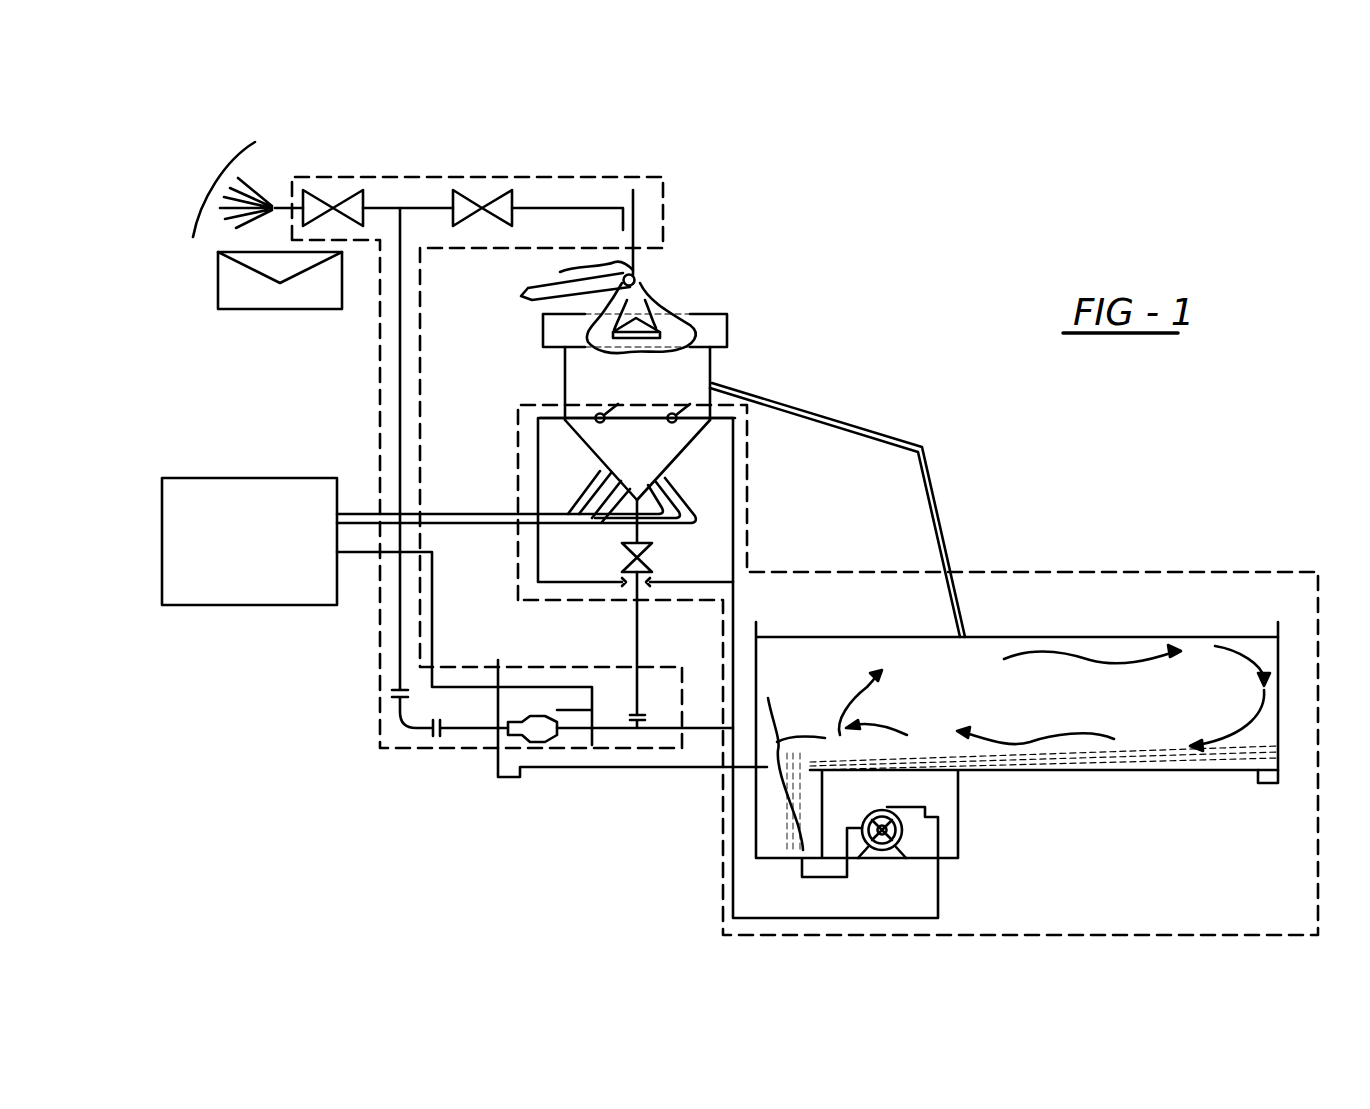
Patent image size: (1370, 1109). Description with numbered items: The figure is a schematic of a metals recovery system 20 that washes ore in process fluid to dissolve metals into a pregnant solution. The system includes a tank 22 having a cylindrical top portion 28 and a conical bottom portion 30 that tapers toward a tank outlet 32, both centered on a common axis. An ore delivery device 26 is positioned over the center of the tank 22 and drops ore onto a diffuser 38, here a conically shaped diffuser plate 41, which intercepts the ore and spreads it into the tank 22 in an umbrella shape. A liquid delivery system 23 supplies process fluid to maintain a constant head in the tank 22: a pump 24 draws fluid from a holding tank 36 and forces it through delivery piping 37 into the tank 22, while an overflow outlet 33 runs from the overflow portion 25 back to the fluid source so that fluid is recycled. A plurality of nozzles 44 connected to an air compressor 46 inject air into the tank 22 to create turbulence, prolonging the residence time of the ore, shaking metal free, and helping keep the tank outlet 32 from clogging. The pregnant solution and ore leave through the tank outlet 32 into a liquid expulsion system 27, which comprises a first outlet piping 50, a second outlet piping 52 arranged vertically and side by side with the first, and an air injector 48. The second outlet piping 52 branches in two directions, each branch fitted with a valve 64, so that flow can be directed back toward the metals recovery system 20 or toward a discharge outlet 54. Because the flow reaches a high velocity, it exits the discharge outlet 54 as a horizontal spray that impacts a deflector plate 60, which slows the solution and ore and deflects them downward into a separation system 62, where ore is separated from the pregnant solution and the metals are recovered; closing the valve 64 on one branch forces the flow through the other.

The metals recovery system 20 is at (941, 268).
The tank 22 is at (720, 409).
The liquid delivery system 23 is at (1150, 573).
The pump 24 is at (903, 833).
The overflow portion 25 is at (717, 330).
The ore delivery device 26 is at (552, 285).
The liquid expulsion system 27 is at (613, 177).
The top portion 28 is at (565, 385).
The bottom portion 30 is at (688, 452).
The tank outlet 32 is at (620, 496).
The overflow outlet 33 is at (798, 407).
The holding tank 36 is at (1281, 677).
The delivery piping 37 is at (735, 604).
The diffuser 38 is at (642, 320).
The diffuser plate 41 is at (634, 276).
The nozzles 44 is at (583, 500).
The air compressor 46 is at (248, 478).
The air injector 48 is at (563, 745).
The first outlet piping 50 is at (637, 615).
The second outlet piping 52 is at (398, 605).
The discharge outlet 54 is at (270, 190).
The deflector plate 60 is at (212, 177).
The separation system 62 is at (218, 288).
The valve 64 is at (320, 200).